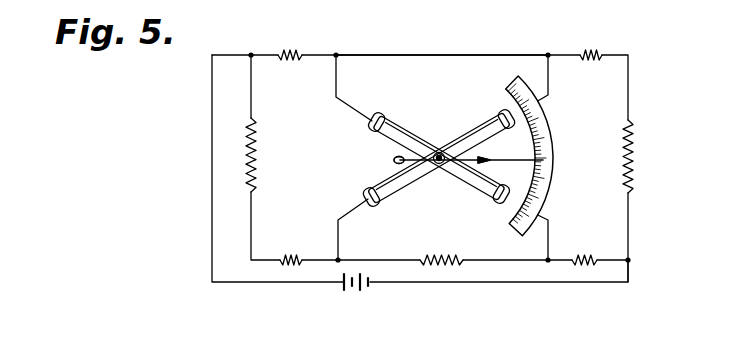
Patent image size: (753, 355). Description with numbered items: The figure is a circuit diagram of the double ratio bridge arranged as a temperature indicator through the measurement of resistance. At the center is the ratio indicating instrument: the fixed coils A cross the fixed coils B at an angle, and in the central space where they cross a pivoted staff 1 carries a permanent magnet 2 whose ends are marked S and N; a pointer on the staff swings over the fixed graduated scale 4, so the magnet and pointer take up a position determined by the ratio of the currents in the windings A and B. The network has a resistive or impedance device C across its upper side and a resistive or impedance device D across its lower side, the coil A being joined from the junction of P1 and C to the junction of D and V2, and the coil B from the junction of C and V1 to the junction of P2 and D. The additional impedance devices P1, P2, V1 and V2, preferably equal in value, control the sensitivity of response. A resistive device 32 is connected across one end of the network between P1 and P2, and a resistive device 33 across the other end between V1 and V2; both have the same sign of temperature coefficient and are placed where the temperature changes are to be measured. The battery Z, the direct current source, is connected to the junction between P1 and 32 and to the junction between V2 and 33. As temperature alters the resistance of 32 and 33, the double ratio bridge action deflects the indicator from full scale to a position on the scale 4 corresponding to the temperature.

The staff 1 is at (438, 171).
The permanent magnet 2 is at (394, 163).
The fixed graduated scale 4 is at (545, 115).
The resistive device 32 is at (260, 154).
The resistive device 33 is at (636, 167).
The fixed coils A is at (411, 128).
The fixed coils B is at (481, 130).
The resistive or impedance device C is at (442, 42).
The resistive or impedance device D is at (441, 250).
The additional impedance device P1 is at (290, 67).
The additional impedance device P2 is at (291, 250).
The additional impedance device V1 is at (590, 67).
The additional impedance device V2 is at (585, 250).
The portion of variable impedance device S is at (391, 159).
The north pole N is at (490, 166).
The source Z is at (356, 293).